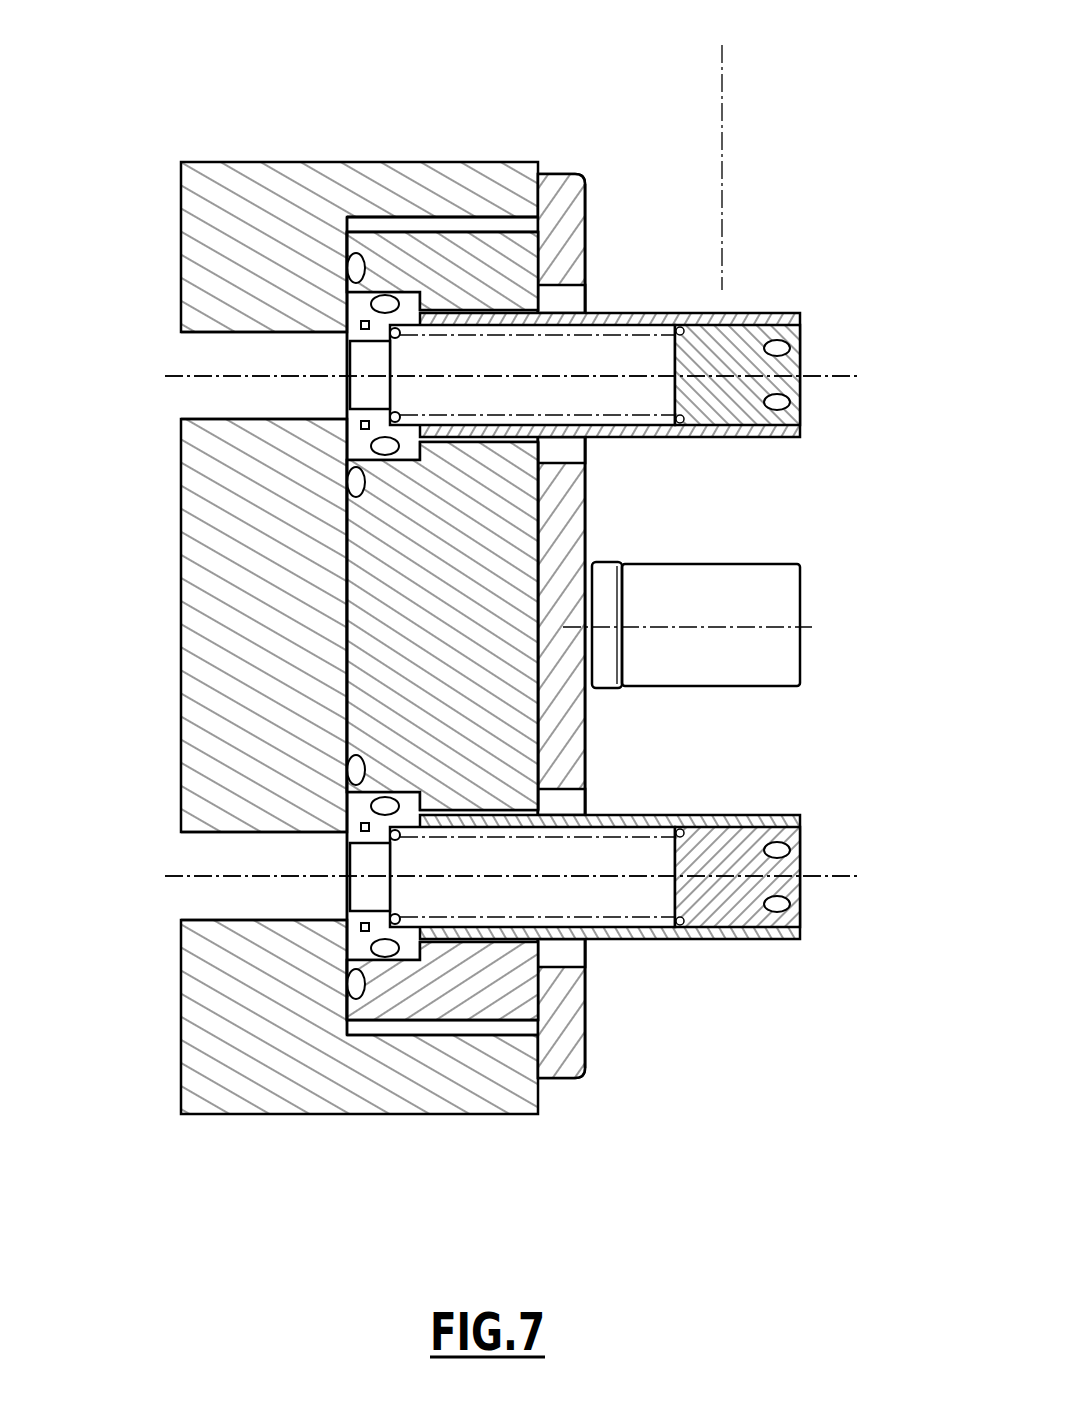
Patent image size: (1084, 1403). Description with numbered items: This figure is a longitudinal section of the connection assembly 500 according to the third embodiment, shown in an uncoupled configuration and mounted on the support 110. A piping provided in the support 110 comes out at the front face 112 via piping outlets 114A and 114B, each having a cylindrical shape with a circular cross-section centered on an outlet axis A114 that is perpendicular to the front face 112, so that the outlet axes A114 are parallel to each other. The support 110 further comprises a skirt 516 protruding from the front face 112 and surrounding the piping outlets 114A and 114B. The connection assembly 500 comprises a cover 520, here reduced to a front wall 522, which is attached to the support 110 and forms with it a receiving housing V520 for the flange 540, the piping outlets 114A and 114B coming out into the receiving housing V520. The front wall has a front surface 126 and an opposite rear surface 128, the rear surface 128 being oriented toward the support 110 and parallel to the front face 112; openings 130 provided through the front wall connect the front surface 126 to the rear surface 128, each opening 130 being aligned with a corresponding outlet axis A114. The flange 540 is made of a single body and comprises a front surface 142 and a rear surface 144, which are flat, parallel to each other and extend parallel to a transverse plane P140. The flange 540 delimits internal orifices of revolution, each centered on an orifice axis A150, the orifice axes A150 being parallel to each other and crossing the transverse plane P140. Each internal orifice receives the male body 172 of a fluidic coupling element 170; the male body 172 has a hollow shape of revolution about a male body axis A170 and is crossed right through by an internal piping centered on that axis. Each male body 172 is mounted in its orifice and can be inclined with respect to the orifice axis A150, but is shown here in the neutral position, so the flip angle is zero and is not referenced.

The connection assembly 500 is at (830, 100).
The transverse plane P140 is at (742, 147).
The support 110 is at (205, 213).
The front face 112 is at (350, 212).
The skirt 516 is at (432, 192).
The flange 540 is at (486, 255).
The cover 520 is at (565, 190).
The receiving housing V520 is at (500, 226).
The front wall 522 is at (560, 252).
The opening 130 is at (562, 298).
The male body axis A170 is at (820, 376).
The orifice axis A150 is at (820, 377).
The piping outlet 114A is at (243, 356).
The piping outlet 114B is at (243, 856).
The outlet axis A114 is at (168, 377).
The front surface 142 is at (540, 499).
The front surface 126 is at (592, 530).
The male body 172 is at (768, 430).
The fluidic coupling element 170 is at (765, 427).
The rear surface 144 is at (345, 565).
The rear surface 128 is at (538, 641).